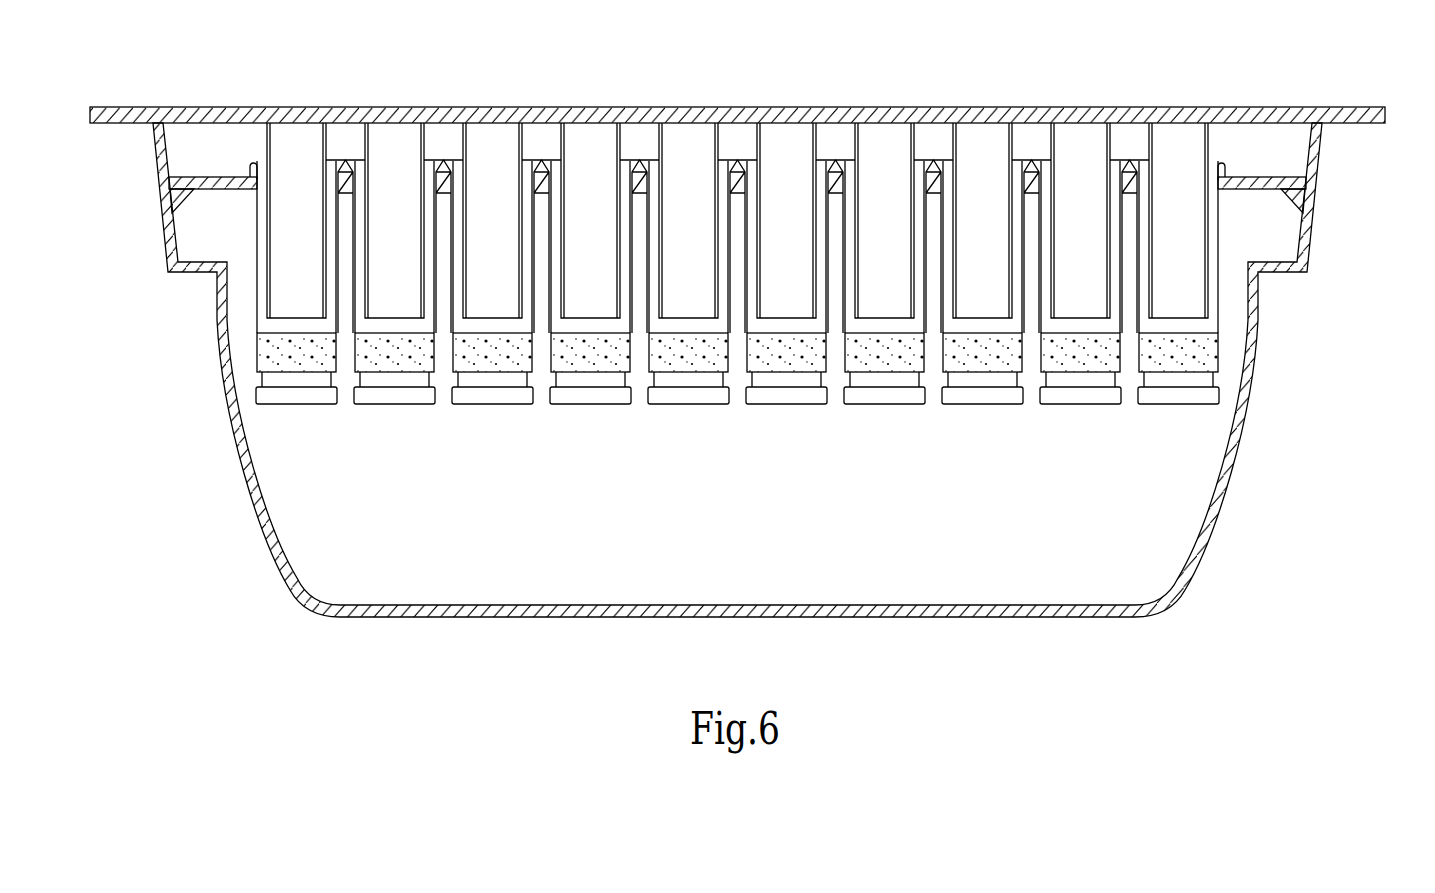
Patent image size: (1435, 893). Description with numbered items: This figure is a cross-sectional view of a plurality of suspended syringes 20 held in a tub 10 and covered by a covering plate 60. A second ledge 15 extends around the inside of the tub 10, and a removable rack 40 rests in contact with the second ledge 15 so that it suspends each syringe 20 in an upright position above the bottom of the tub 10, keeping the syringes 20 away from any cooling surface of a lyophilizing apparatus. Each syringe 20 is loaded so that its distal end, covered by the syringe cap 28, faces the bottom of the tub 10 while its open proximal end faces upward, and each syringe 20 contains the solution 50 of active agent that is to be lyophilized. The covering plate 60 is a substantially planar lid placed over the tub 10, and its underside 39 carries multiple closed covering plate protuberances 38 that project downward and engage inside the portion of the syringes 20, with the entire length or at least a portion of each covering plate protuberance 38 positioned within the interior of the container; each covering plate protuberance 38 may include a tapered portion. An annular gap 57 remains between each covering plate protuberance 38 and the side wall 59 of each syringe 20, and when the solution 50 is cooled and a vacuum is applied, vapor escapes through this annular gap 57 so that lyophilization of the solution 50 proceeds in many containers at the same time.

The tub 10 is at (1228, 505).
The second ledge 15 is at (171, 193).
The syringe 20 is at (1222, 241).
The syringe cap 28 is at (880, 406).
The covering plate protuberance 38 is at (257, 305).
The underside 39 is at (1275, 123).
The removable rack 40 is at (188, 177).
The solution 50 is at (1210, 354).
The annular gap 57 is at (428, 216).
The side wall 59 is at (424, 290).
The covering plate 60 is at (757, 120).